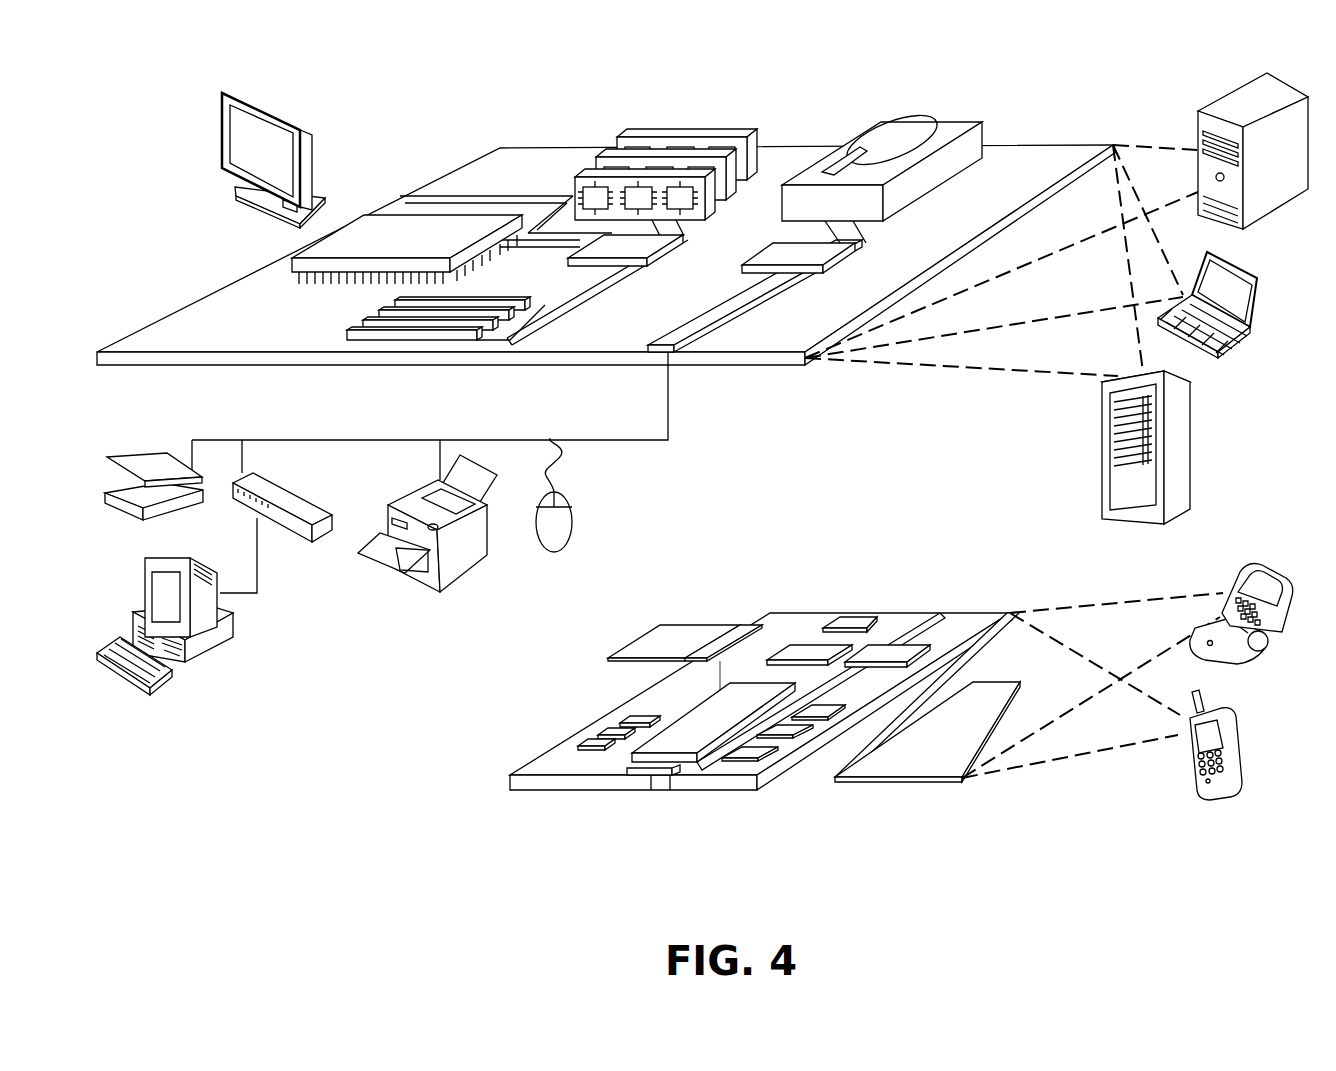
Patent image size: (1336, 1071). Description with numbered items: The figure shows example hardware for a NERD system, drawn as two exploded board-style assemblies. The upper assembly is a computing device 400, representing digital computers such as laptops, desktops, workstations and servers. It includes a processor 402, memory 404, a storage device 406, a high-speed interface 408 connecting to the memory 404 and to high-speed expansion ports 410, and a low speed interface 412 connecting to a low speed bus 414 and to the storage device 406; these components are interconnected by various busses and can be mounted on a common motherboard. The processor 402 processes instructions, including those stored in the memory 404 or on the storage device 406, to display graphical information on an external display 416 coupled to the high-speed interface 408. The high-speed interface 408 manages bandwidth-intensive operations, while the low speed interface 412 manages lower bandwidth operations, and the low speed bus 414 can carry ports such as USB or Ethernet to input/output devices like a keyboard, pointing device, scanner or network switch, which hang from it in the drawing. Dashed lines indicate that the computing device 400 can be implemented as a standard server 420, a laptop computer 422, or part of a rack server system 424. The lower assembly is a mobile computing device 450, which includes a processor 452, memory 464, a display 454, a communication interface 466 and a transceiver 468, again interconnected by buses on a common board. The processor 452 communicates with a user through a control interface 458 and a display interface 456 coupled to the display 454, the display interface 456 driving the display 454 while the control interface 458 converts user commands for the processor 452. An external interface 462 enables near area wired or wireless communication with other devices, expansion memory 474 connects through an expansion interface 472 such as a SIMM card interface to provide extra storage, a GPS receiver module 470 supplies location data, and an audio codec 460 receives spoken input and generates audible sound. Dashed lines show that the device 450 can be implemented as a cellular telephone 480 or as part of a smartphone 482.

The computing device 400 is at (426, 112).
The processor 402 is at (300, 262).
The memory 404 is at (676, 145).
The storage device 406 is at (872, 128).
The high-speed interface 408 is at (598, 248).
The high-speed expansion ports 410 is at (385, 322).
The low speed interface 412 is at (770, 255).
The low speed bus 414 is at (678, 355).
The display 416 is at (230, 93).
The standard server 420 is at (1197, 130).
The laptop computer 422 is at (1205, 365).
The rack server system 424 is at (1100, 476).
The computing device 450 is at (478, 796).
The processor 452 is at (688, 748).
The display 454 is at (940, 770).
The display interface 456 is at (775, 760).
The control interface 458 is at (808, 737).
The audio codec 460 is at (818, 712).
The external interface 462 is at (650, 772).
The memory 464 is at (598, 746).
The communication interface 466 is at (800, 655).
The transceiver 468 is at (878, 655).
The GPS receiver module 470 is at (855, 622).
The expansion interface 472 is at (718, 650).
The expansion memory 474 is at (655, 656).
The cellular telephone 480 is at (1246, 580).
The smartphone 482 is at (1180, 748).